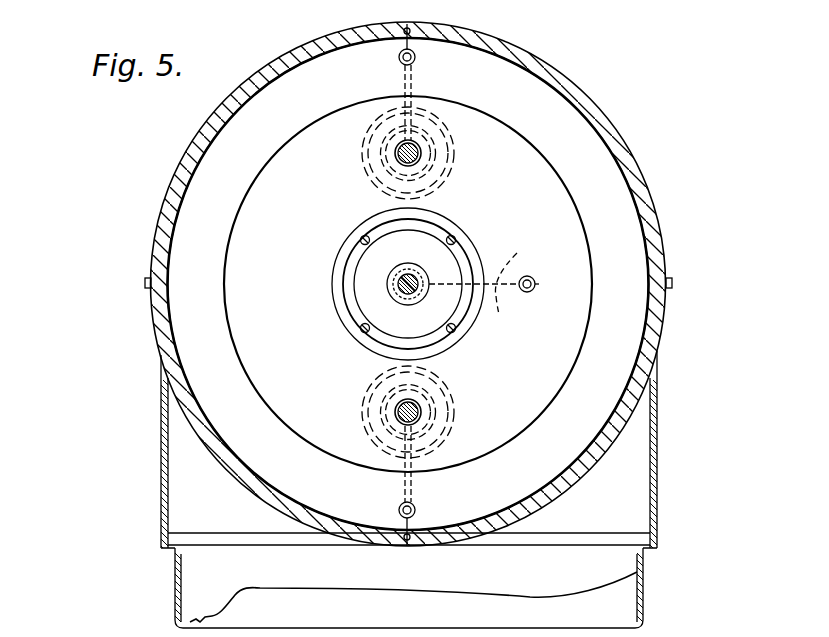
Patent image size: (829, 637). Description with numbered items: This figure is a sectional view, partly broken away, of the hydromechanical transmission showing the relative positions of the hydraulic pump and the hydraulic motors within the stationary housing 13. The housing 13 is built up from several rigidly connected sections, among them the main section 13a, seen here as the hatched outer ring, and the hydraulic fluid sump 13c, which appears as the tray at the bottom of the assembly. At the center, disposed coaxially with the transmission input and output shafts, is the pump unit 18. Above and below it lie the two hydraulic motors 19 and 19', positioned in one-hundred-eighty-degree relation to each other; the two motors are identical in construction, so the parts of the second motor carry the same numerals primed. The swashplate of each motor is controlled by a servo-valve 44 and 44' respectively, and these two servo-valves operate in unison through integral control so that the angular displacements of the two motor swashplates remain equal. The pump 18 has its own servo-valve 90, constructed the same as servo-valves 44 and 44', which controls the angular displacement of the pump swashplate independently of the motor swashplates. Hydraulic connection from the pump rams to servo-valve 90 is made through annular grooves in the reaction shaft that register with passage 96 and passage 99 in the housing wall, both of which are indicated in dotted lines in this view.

The housing 13 is at (637, 150).
The main section 13a is at (646, 199).
The hydraulic fluid sump 13c is at (660, 626).
The pump unit 18 is at (481, 241).
The hydraulic motor 19 is at (427, 153).
The hydraulic motor 19' is at (436, 412).
The servo-valve 44 is at (430, 82).
The servo-valve 44' is at (431, 486).
The servo-valve 90 is at (536, 277).
The passage 96 is at (510, 314).
The passage 99 is at (510, 265).